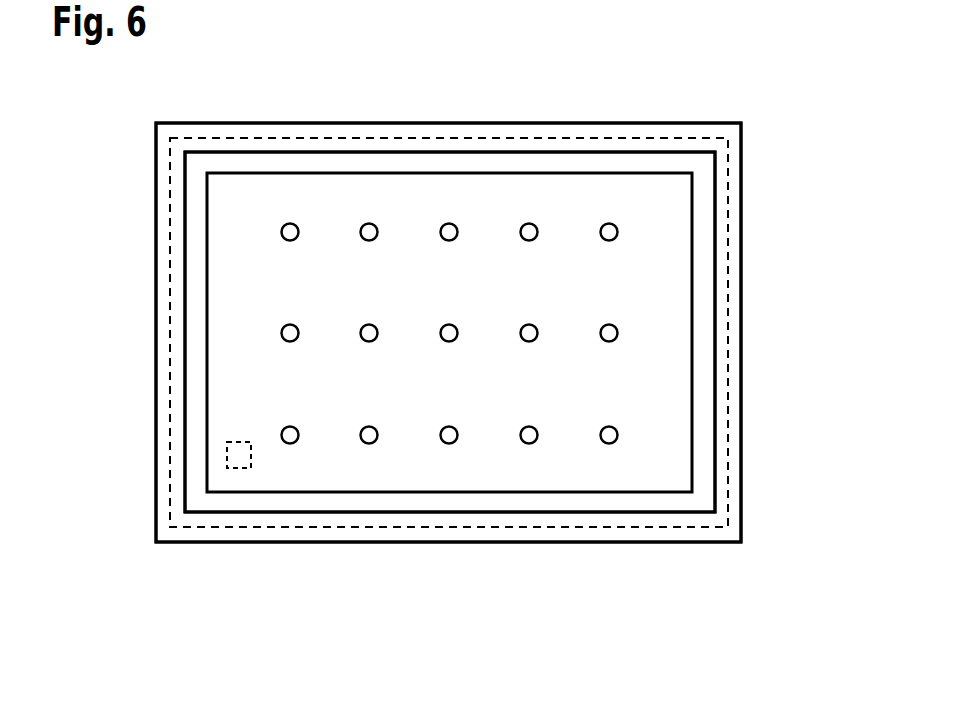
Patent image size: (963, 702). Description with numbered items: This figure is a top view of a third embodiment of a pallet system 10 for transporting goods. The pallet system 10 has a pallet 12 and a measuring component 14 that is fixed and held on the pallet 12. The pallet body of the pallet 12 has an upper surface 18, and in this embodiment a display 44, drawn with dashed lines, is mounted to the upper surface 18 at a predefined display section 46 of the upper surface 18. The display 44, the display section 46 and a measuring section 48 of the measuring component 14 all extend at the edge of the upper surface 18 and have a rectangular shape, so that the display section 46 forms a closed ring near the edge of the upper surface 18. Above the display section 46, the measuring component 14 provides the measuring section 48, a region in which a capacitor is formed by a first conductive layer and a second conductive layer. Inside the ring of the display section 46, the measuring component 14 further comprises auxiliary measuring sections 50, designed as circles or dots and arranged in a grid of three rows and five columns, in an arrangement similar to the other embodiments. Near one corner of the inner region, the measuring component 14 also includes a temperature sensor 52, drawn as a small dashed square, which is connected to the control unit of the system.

The pallet system 10 is at (774, 98).
The pallet 12 is at (657, 123).
The measuring component 14 is at (240, 130).
The upper surface 18 is at (664, 533).
The display 44 is at (728, 198).
The display section 46 is at (569, 163).
The measuring section 48 is at (450, 332).
The auxiliary measuring sections 50 is at (369, 232).
The temperature sensor 52 is at (243, 468).